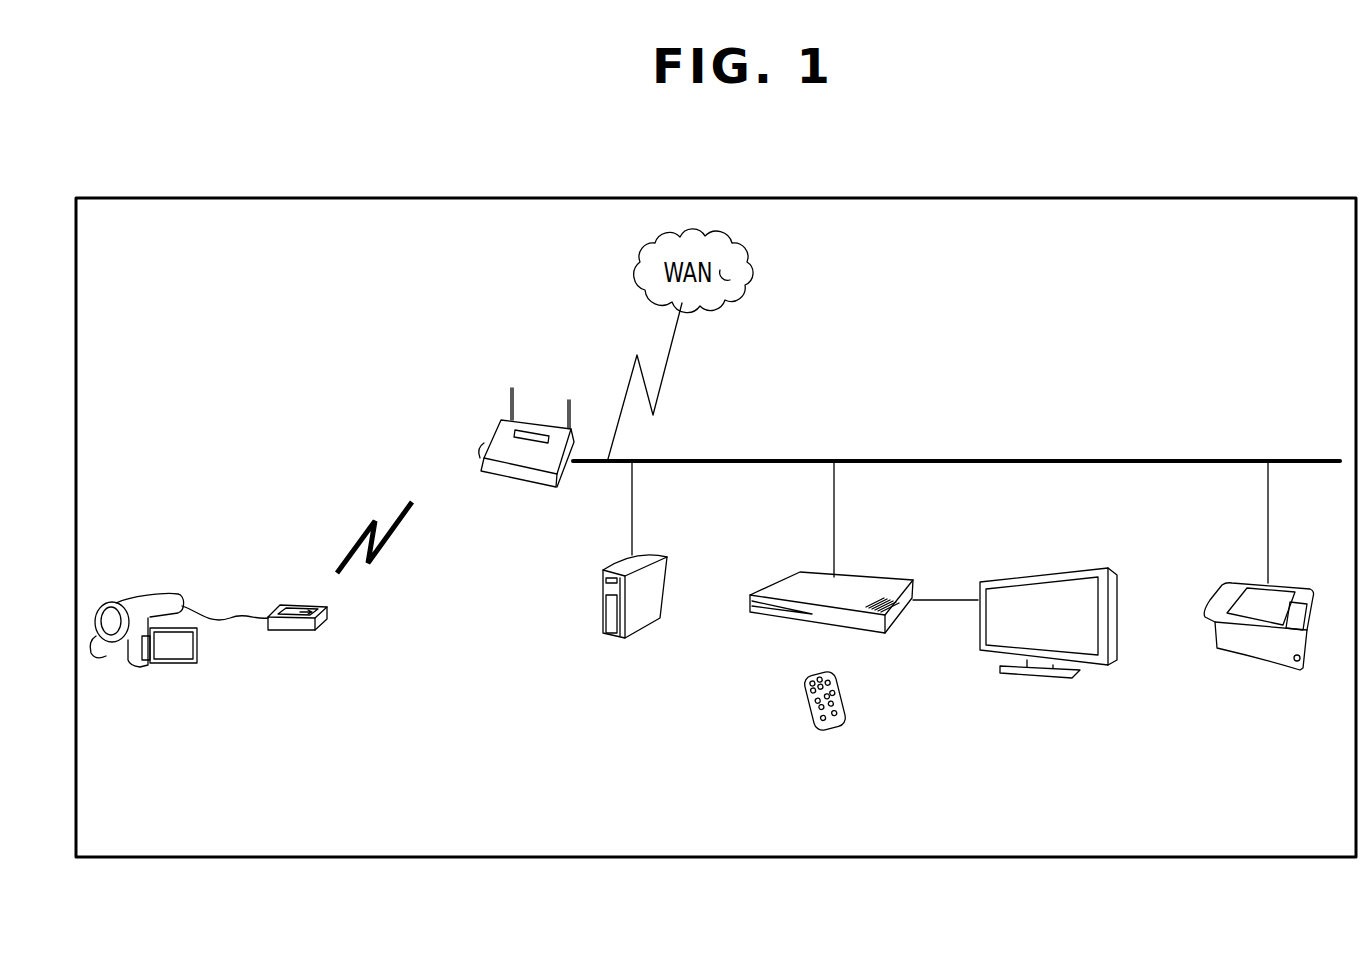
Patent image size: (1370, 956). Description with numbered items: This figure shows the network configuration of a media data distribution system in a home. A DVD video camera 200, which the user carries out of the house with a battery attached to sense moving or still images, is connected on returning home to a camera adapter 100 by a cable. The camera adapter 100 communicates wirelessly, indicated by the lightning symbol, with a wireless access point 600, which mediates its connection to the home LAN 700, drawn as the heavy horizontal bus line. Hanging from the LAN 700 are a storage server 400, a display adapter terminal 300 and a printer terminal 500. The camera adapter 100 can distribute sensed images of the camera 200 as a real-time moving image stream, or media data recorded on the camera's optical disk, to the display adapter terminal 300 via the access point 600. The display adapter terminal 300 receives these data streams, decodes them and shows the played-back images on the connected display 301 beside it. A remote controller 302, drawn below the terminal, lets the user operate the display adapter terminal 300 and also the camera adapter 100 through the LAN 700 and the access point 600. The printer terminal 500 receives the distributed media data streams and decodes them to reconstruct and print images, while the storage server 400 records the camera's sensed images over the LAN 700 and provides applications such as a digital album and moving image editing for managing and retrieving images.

The camera adapter 100 is at (293, 633).
The DVD video camera 200 is at (135, 667).
The display adapter terminal 300 is at (877, 590).
The display 301 is at (1043, 570).
The remote controller 302 is at (837, 730).
The storage server 400 is at (615, 640).
The printer terminal 500 is at (1260, 657).
The wireless access point 600 is at (500, 423).
The home LAN 700 is at (913, 459).